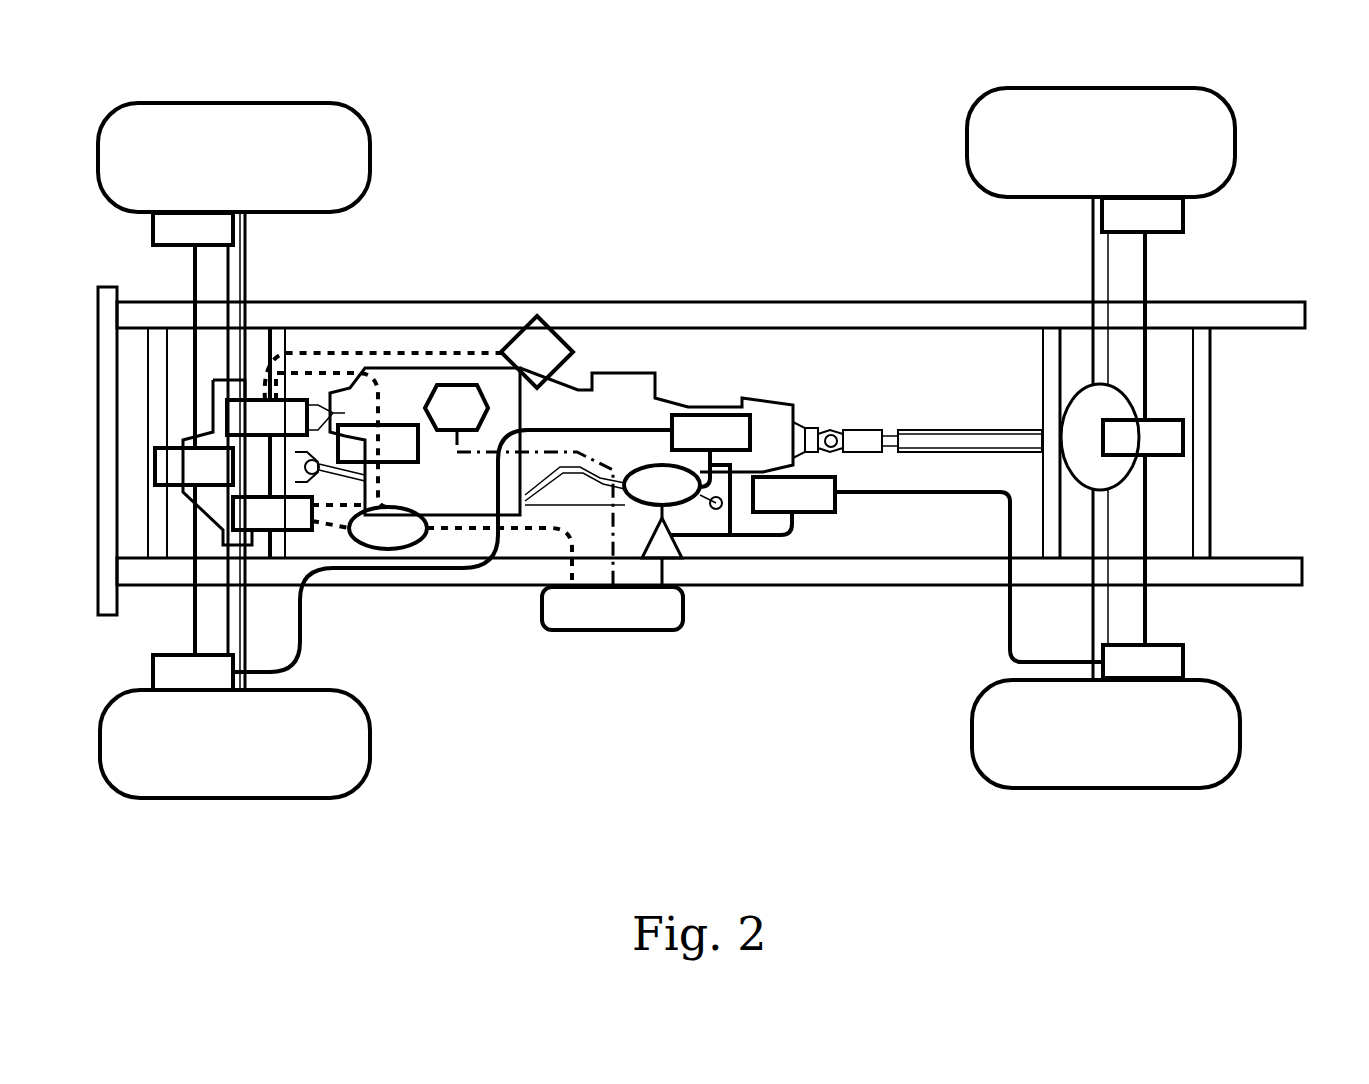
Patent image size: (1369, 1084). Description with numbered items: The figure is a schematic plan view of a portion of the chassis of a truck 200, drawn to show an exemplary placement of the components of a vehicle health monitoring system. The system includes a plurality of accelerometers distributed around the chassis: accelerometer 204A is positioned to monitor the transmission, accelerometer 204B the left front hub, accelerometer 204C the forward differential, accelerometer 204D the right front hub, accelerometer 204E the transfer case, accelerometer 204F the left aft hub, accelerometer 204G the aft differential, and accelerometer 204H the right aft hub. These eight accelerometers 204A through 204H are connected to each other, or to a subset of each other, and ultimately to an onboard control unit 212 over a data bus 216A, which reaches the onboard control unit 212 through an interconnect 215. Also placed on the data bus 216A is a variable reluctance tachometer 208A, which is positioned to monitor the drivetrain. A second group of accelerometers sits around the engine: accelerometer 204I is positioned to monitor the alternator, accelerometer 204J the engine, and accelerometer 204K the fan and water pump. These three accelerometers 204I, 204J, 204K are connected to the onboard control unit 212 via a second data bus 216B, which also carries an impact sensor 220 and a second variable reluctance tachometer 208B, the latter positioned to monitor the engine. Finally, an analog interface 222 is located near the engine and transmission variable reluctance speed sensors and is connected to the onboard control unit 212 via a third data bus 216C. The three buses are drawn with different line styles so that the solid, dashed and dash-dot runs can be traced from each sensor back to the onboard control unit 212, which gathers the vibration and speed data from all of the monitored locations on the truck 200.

The truck 200 is at (607, 125).
The accelerometer 204A is at (711, 432).
The accelerometer 204B is at (193, 672).
The accelerometer 204C is at (194, 551).
The accelerometer 204D is at (193, 330).
The accelerometer 204E is at (794, 494).
The accelerometer 204F is at (1143, 661).
The accelerometer 204G is at (1122, 514).
The accelerometer 204H is at (1142, 309).
The accelerometer 204I is at (272, 527).
The accelerometer 204J is at (378, 443).
The accelerometer 204K is at (267, 412).
The variable reluctance tachometer 208A is at (662, 485).
The second variable reluctance tachometer 208B is at (388, 528).
The onboard control unit 212 is at (612, 608).
The interconnect 215 is at (676, 550).
The data bus 216A is at (910, 848).
The second data bus 216B is at (910, 890).
The third data bus 216C is at (910, 935).
The impact 220 is at (537, 352).
The analog interface 222 is at (456, 407).